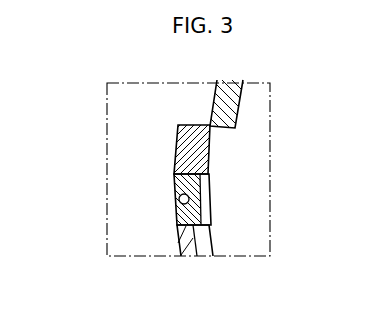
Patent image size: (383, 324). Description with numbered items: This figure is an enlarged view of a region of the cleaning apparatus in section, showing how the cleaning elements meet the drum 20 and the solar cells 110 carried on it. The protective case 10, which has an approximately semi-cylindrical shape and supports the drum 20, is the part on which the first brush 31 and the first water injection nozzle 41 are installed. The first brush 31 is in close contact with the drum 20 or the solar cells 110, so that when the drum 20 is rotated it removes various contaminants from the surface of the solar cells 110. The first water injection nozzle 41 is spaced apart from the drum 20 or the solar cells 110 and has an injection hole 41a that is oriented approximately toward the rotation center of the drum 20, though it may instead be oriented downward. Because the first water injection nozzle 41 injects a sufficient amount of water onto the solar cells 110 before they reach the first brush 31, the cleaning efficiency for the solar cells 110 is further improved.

The protective case 10 is at (182, 244).
The drum 20 is at (252, 147).
The first brush 31 is at (177, 136).
The first water injection nozzle 41 is at (175, 199).
The injection hole 41a is at (189, 199).
The solar cells 110 is at (236, 103).